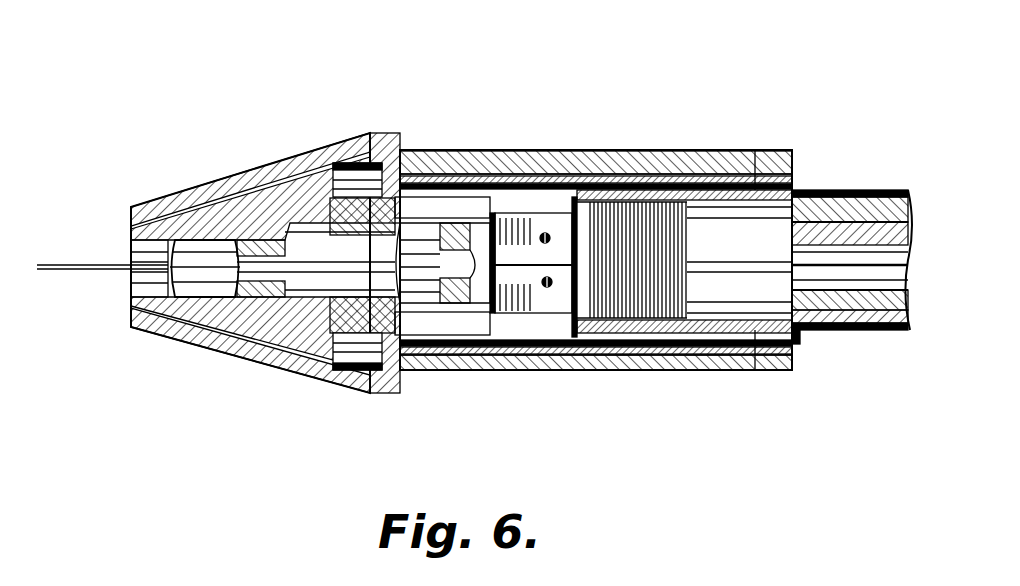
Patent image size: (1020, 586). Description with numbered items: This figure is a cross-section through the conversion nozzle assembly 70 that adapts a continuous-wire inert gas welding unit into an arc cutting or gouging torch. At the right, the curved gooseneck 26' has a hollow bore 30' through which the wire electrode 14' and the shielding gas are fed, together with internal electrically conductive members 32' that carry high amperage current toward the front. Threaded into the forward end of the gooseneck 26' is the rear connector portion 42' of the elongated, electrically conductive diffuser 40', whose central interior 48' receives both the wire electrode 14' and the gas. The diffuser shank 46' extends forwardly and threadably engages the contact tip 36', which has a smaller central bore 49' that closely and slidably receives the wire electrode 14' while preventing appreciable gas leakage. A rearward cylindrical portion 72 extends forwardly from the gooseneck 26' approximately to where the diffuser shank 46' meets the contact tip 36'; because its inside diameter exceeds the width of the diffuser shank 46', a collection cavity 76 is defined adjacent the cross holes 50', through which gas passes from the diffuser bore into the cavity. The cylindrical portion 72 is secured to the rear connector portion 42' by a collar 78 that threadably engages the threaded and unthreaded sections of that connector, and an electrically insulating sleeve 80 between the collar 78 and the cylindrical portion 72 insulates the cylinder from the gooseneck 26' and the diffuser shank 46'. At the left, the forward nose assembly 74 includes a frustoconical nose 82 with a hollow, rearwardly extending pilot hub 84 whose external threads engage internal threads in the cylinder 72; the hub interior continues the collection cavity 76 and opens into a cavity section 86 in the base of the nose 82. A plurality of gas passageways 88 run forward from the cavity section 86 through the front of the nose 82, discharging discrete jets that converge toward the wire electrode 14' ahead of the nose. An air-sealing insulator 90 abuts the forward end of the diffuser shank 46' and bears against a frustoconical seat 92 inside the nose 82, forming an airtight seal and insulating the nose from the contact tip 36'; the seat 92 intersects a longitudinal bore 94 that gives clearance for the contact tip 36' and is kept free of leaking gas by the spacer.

The wire electrode 14' is at (102, 228).
The gooseneck 26' is at (853, 209).
The bore 30' is at (850, 312).
The electrically conductive members 32' is at (887, 311).
The contact tip 36' is at (110, 316).
The diffuser member 40' is at (739, 260).
The rear connector portion 42' is at (850, 187).
The diffuser shank 46' is at (536, 319).
The central interior 48' is at (445, 318).
The central bore 49' is at (277, 320).
The cross holes 50' is at (684, 312).
The nozzle assembly 70 is at (696, 86).
The cylindrical portion 72 is at (485, 165).
The nose assembly 74 is at (271, 128).
The collection cavity 76 is at (545, 180).
The collar 78 is at (757, 160).
The electrically insulating sleeve 80 is at (798, 342).
The nose 82 is at (330, 165).
The pilot hub 84 is at (445, 178).
The cavity section 86 is at (365, 385).
The gas passageways 88 is at (212, 200).
The air-sealing insulator 90 is at (312, 373).
The seat 92 is at (293, 203).
The longitudinal bore 94 is at (137, 248).